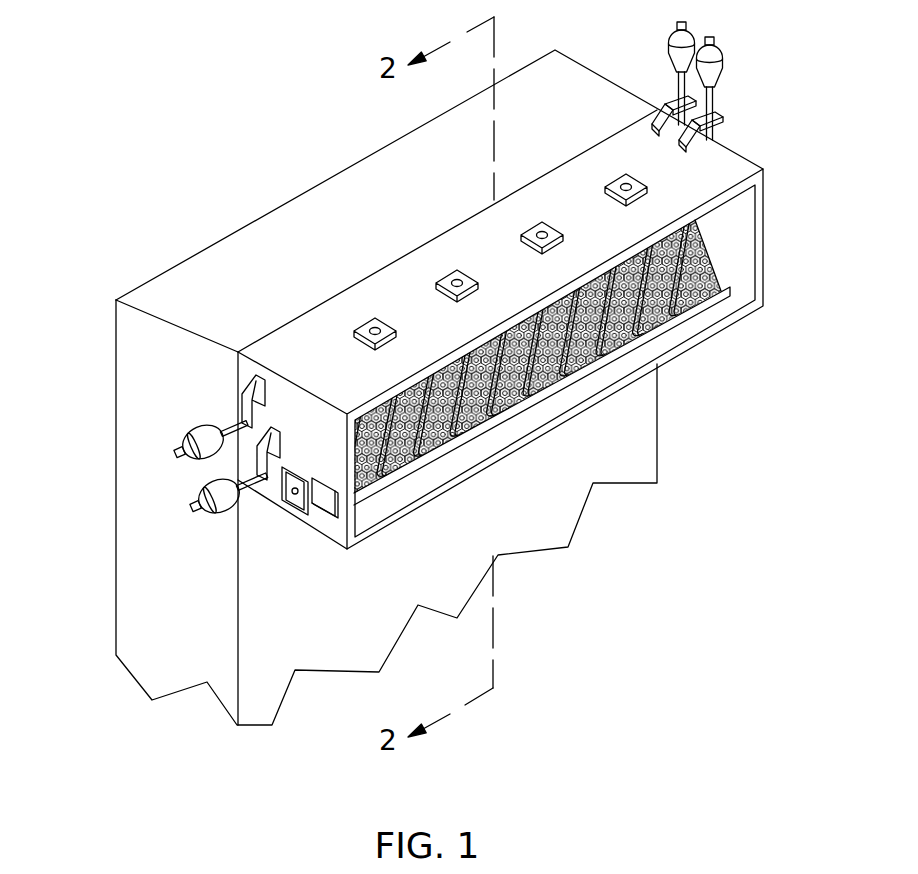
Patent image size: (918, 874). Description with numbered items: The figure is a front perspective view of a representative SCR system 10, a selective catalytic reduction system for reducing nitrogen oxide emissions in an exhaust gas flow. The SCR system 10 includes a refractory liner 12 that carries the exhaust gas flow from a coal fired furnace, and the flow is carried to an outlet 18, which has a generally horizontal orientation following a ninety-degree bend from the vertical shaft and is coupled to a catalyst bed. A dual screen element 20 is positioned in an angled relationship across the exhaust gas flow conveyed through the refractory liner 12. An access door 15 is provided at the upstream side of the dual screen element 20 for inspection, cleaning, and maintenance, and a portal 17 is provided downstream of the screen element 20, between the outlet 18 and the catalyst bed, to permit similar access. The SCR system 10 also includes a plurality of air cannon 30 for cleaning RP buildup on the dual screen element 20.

The SCR system 10 is at (186, 136).
The refractory liner 12 is at (137, 532).
The access door 15 is at (292, 508).
The portal 17 is at (330, 515).
The outlet 18 is at (733, 260).
The dual screen element 20 is at (653, 303).
The air cannon 30 is at (190, 448).